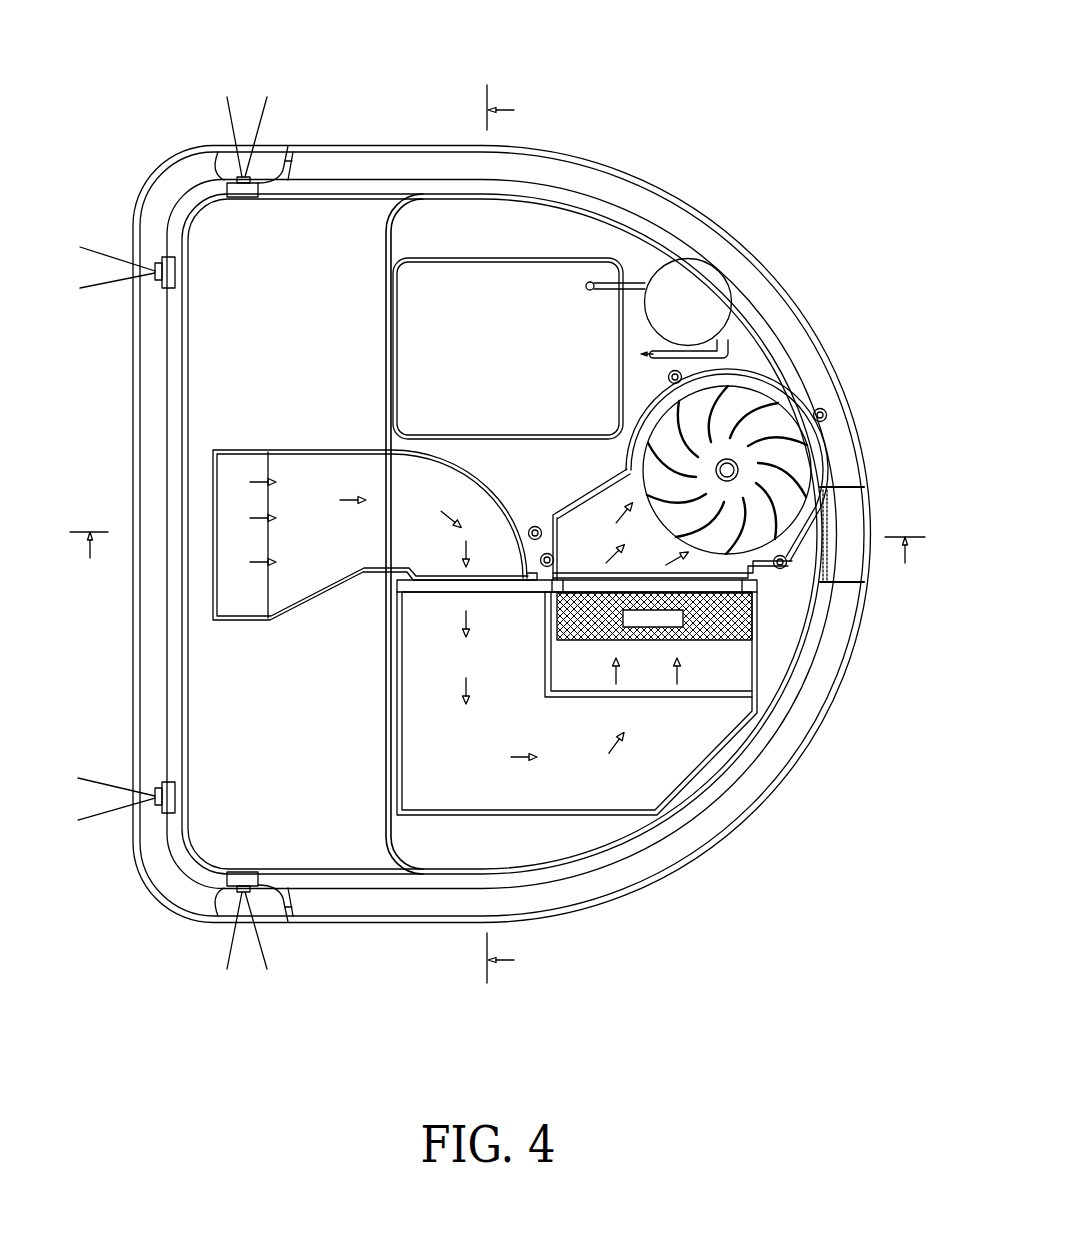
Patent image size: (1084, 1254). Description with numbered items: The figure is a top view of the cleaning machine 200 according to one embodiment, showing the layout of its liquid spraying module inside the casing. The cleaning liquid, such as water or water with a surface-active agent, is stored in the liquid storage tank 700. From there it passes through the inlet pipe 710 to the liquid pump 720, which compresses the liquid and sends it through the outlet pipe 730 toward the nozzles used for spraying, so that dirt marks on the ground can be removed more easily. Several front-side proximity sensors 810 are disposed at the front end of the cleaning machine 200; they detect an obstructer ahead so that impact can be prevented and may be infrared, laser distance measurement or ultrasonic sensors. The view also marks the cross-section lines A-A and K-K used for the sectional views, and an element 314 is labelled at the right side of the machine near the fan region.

The cleaning machine 200 is at (776, 42).
The front-side proximity sensor 810 is at (233, 187).
The liquid storage tank 700 is at (553, 270).
The inlet pipe 710 is at (637, 287).
The liquid pump 720 is at (692, 282).
The outlet pipe 730 is at (730, 352).
The air outlet 314 is at (780, 457).